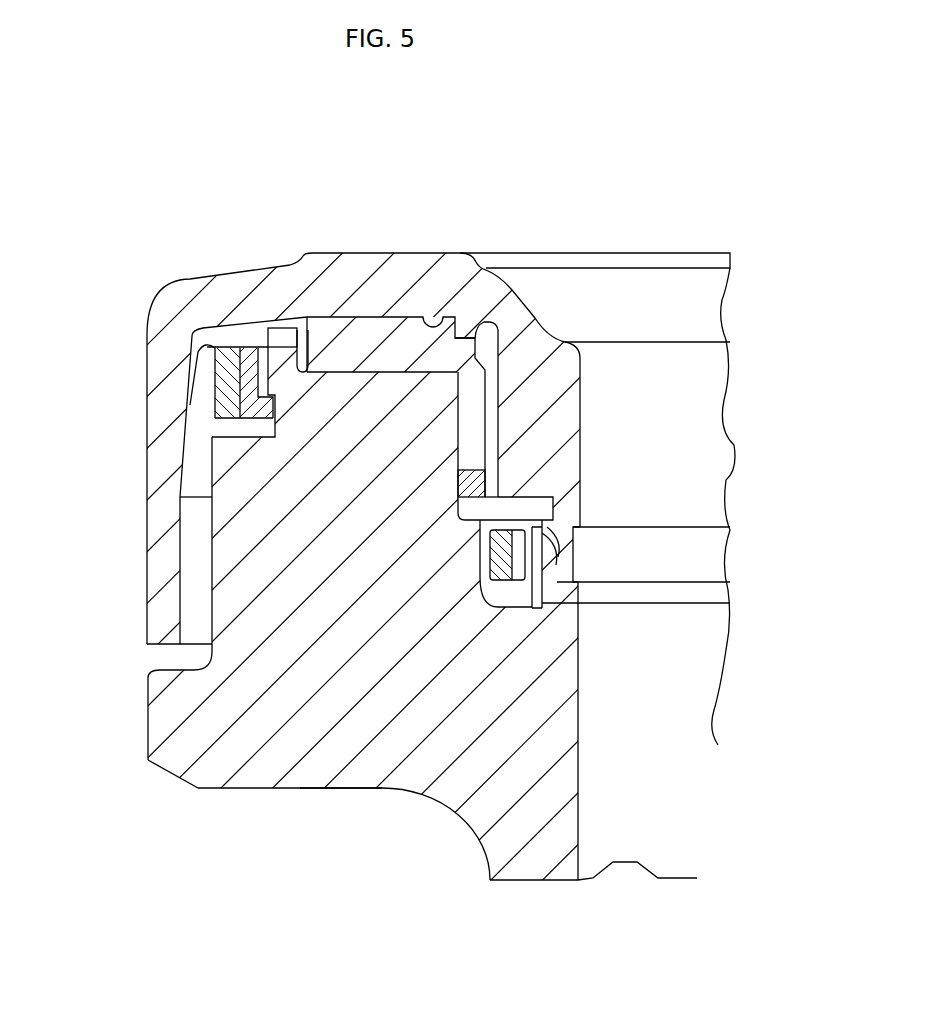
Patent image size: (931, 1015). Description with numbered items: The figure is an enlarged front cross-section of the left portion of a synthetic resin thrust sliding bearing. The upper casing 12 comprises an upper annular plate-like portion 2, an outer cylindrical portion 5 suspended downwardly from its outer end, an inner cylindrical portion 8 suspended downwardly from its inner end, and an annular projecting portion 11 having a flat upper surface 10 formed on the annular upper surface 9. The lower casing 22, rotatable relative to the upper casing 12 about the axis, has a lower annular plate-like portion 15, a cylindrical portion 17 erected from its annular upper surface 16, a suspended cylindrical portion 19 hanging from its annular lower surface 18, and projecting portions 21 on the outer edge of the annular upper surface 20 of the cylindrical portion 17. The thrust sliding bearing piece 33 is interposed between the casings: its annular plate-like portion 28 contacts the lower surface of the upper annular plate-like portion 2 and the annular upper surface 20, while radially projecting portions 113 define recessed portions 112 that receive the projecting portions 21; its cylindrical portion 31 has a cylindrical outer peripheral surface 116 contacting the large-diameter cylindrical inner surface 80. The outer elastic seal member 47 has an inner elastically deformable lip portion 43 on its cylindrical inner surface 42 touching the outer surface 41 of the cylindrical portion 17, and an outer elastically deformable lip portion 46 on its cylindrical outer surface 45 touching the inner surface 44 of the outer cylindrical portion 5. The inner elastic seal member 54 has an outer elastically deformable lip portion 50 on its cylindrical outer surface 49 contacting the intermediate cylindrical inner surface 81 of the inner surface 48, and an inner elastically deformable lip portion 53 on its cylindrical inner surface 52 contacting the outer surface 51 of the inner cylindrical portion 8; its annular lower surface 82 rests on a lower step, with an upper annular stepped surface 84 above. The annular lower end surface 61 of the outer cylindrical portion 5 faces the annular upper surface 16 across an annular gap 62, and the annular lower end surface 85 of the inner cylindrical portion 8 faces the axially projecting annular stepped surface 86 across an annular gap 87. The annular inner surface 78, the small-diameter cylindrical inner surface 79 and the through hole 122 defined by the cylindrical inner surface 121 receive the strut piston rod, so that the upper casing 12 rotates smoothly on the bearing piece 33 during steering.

The upper annular plate-like portion 2 is at (385, 287).
The outer cylindrical portion 5 is at (163, 612).
The inner cylindrical portion 8 is at (547, 392).
The annular upper surface 9 is at (303, 331).
The flat upper surface 10 is at (578, 253).
The annular projecting portion 11 is at (447, 257).
The upper casing 12 is at (141, 310).
The lower annular plate-like portion 15 is at (348, 752).
The annular upper surface 16 is at (152, 672).
The cylindrical portion 17 is at (330, 497).
The annular lower surface 18 is at (297, 791).
The suspended cylindrical portion 19 is at (515, 851).
The annular upper surface 20 is at (402, 371).
The projecting portions 21 is at (257, 365).
The lower casing 22 is at (265, 798).
The annular plate-like portion 28 is at (360, 333).
The cylindrical portion 31 is at (520, 420).
The thrust sliding bearing piece 33 is at (484, 330).
The outer surface 41 is at (207, 523).
The cylindrical inner surface 42 is at (208, 336).
The inner elastically deformable lip portion 43 is at (272, 412).
The inner surface 44 is at (188, 553).
The cylindrical outer surface 45 is at (208, 412).
The outer elastically deformable lip portion 46 is at (196, 376).
The outer elastic seal member 47 is at (195, 330).
The inner surface 48 is at (490, 433).
The cylindrical outer surface 49 is at (460, 513).
The outer elastically deformable lip portion 50 is at (487, 573).
The outer surface 51 is at (540, 374).
The cylindrical inner surface 52 is at (545, 563).
The inner elastically deformable lip portion 53 is at (545, 545).
The inner elastic seal member 54 is at (550, 597).
The annular lower end surface 61 is at (160, 648).
The annular gap 62 is at (180, 656).
The annular inner surface 78 is at (578, 738).
The small-diameter cylindrical inner surface 79 is at (578, 678).
The large-diameter cylindrical inner surface 80 is at (497, 380).
The intermediate cylindrical inner surface 81 is at (483, 573).
The annular lower surface 82 is at (513, 607).
The upper annular stepped surface 84 is at (490, 483).
The annular lower end surface 85 is at (684, 584).
The axially projecting annular stepped surface 86 is at (688, 604).
The annular gap 87 is at (700, 588).
The recessed portions 112 is at (309, 340).
The radially projecting portions 113 is at (280, 337).
The cylindrical outer peripheral surface 116 is at (572, 343).
The cylindrical inner surface 121 is at (583, 378).
The through hole 122 is at (712, 449).